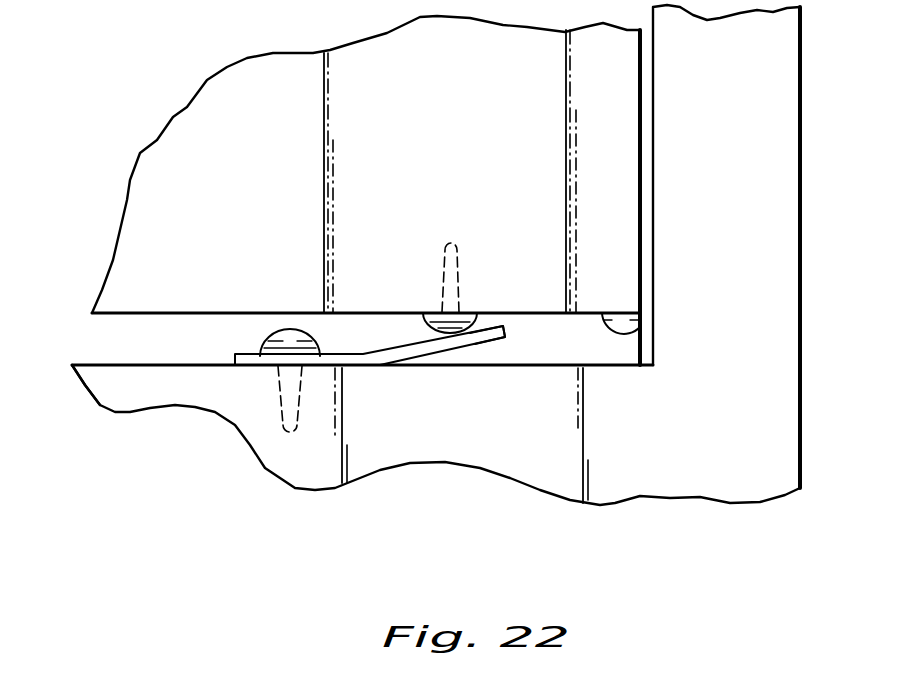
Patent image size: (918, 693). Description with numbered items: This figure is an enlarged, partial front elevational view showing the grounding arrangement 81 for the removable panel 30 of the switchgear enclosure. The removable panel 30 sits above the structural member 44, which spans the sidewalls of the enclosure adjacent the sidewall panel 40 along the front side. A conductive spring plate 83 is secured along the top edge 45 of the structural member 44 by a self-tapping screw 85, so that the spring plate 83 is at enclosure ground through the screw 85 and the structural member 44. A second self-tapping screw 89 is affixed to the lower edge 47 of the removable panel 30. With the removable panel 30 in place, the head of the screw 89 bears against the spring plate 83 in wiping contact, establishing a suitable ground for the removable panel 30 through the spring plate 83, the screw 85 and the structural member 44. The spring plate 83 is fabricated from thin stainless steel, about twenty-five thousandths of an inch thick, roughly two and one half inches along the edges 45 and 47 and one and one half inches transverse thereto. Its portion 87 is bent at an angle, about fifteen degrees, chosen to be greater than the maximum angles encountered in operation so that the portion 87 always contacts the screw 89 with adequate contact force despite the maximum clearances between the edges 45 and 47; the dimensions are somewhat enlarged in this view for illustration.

The removable panel 30 is at (605, 182).
The sidewall panel 40 is at (803, 343).
The structural member 44 is at (517, 460).
The top edge 45 is at (92, 363).
The lower edge 47 is at (628, 333).
The grounding arrangement 81 is at (362, 270).
The conductive spring plate 83 is at (425, 353).
The self-tapping screw 85 is at (280, 330).
The angled portion of spring plate 87 is at (487, 340).
The self-tapping screw 89 is at (423, 331).